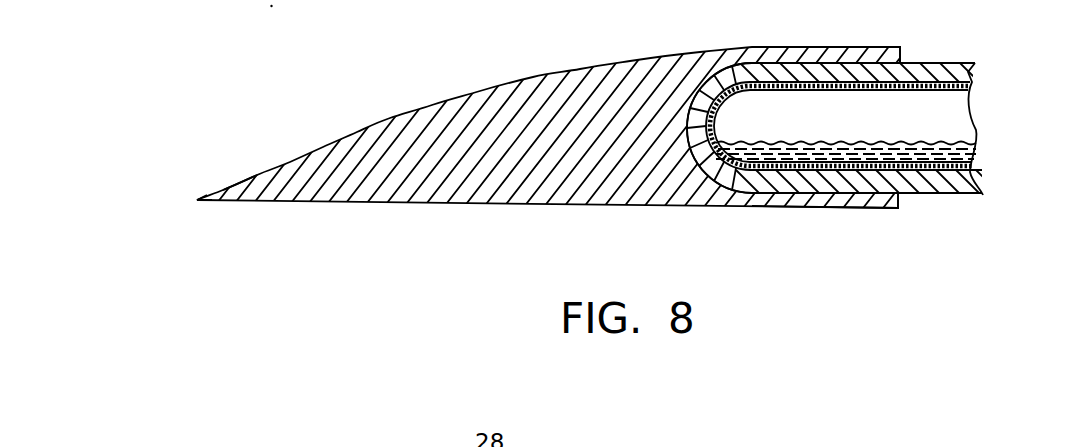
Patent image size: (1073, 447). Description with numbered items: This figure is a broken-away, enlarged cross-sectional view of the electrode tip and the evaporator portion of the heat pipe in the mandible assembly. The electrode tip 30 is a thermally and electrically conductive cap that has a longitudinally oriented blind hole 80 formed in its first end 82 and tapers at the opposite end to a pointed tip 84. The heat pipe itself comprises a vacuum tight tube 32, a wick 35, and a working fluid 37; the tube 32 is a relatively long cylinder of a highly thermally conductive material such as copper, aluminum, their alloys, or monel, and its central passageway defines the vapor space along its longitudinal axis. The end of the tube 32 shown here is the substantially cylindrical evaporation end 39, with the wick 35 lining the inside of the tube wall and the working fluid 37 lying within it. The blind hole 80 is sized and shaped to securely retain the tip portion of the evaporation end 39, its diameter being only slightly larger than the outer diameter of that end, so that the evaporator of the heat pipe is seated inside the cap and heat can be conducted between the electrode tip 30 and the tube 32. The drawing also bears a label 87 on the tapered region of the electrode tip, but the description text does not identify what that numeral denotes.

The electrode tip 30 is at (432, 104).
The vacuum tight tube 32 is at (955, 68).
The wick 35 is at (965, 105).
The working fluid 37 is at (976, 140).
The evaporation end 39 is at (943, 197).
The blind hole 80 is at (903, 63).
The first end 82 is at (812, 47).
The pointed tip 84 is at (198, 202).
The beveled edge surface 87 is at (247, 175).